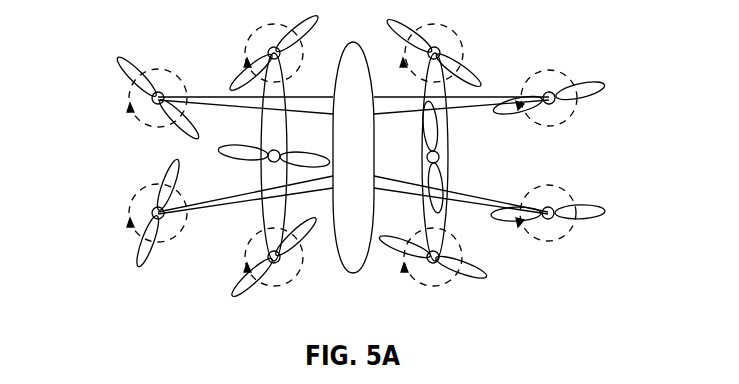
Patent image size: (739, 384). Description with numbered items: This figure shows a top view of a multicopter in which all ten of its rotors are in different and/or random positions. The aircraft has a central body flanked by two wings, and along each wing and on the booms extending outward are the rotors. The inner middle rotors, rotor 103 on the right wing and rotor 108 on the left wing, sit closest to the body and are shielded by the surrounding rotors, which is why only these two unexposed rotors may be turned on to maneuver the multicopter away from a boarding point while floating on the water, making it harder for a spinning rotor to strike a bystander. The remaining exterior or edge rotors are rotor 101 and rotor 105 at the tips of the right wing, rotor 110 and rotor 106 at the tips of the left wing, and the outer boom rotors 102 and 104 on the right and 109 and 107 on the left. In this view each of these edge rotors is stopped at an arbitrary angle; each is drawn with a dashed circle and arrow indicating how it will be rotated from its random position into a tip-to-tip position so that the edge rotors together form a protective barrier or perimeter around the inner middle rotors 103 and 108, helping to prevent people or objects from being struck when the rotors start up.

The rotor 101 is at (481, 88).
The rotor 102 is at (606, 89).
The rotor 103 is at (449, 128).
The rotor 104 is at (606, 214).
The rotor 105 is at (491, 278).
The rotor 106 is at (233, 299).
The rotor 107 is at (140, 267).
The rotor 108 is at (218, 150).
The rotor 109 is at (118, 59).
The rotor 110 is at (233, 90).